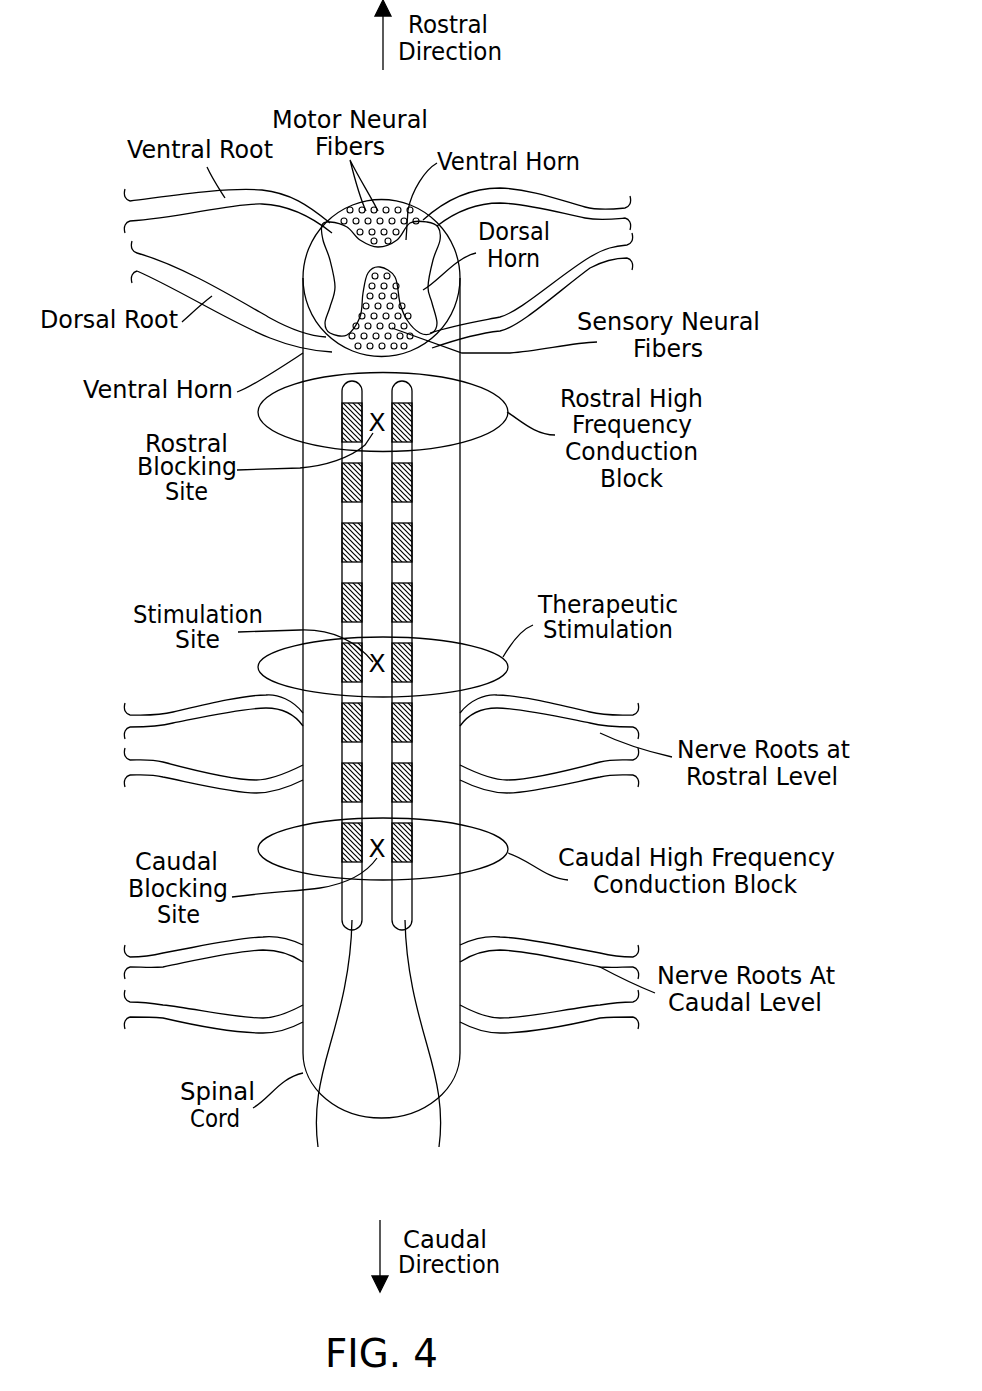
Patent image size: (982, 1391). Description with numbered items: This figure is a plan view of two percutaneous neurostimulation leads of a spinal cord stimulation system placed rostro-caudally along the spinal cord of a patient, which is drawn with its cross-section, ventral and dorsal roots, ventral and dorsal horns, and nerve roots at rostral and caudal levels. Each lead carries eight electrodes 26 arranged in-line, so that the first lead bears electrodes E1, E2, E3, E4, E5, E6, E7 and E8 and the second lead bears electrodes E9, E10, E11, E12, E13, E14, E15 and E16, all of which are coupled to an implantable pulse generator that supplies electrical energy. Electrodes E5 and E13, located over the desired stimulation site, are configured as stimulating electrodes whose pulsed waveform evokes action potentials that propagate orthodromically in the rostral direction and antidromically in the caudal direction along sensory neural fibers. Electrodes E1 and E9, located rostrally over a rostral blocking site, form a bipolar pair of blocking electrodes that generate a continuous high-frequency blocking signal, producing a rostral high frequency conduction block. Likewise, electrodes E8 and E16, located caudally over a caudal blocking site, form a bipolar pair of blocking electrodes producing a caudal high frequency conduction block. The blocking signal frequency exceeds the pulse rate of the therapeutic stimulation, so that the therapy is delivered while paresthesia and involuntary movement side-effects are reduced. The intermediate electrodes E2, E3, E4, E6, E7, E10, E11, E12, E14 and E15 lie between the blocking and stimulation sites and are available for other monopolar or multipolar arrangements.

The electrodes 26 is at (483, 545).
The electrode E1 is at (335, 422).
The electrode E2 is at (335, 482).
The electrode E3 is at (335, 542).
The electrode E4 is at (335, 602).
The electrode E5 is at (335, 662).
The electrode E6 is at (335, 722).
The electrode E7 is at (335, 782).
The electrode E8 is at (335, 842).
The electrode E9 is at (420, 422).
The electrode E10 is at (424, 482).
The electrode E11 is at (423, 542).
The electrode E12 is at (424, 602).
The electrode E13 is at (424, 662).
The electrode E14 is at (424, 722).
The electrode E15 is at (424, 782).
The electrode E16 is at (424, 842).